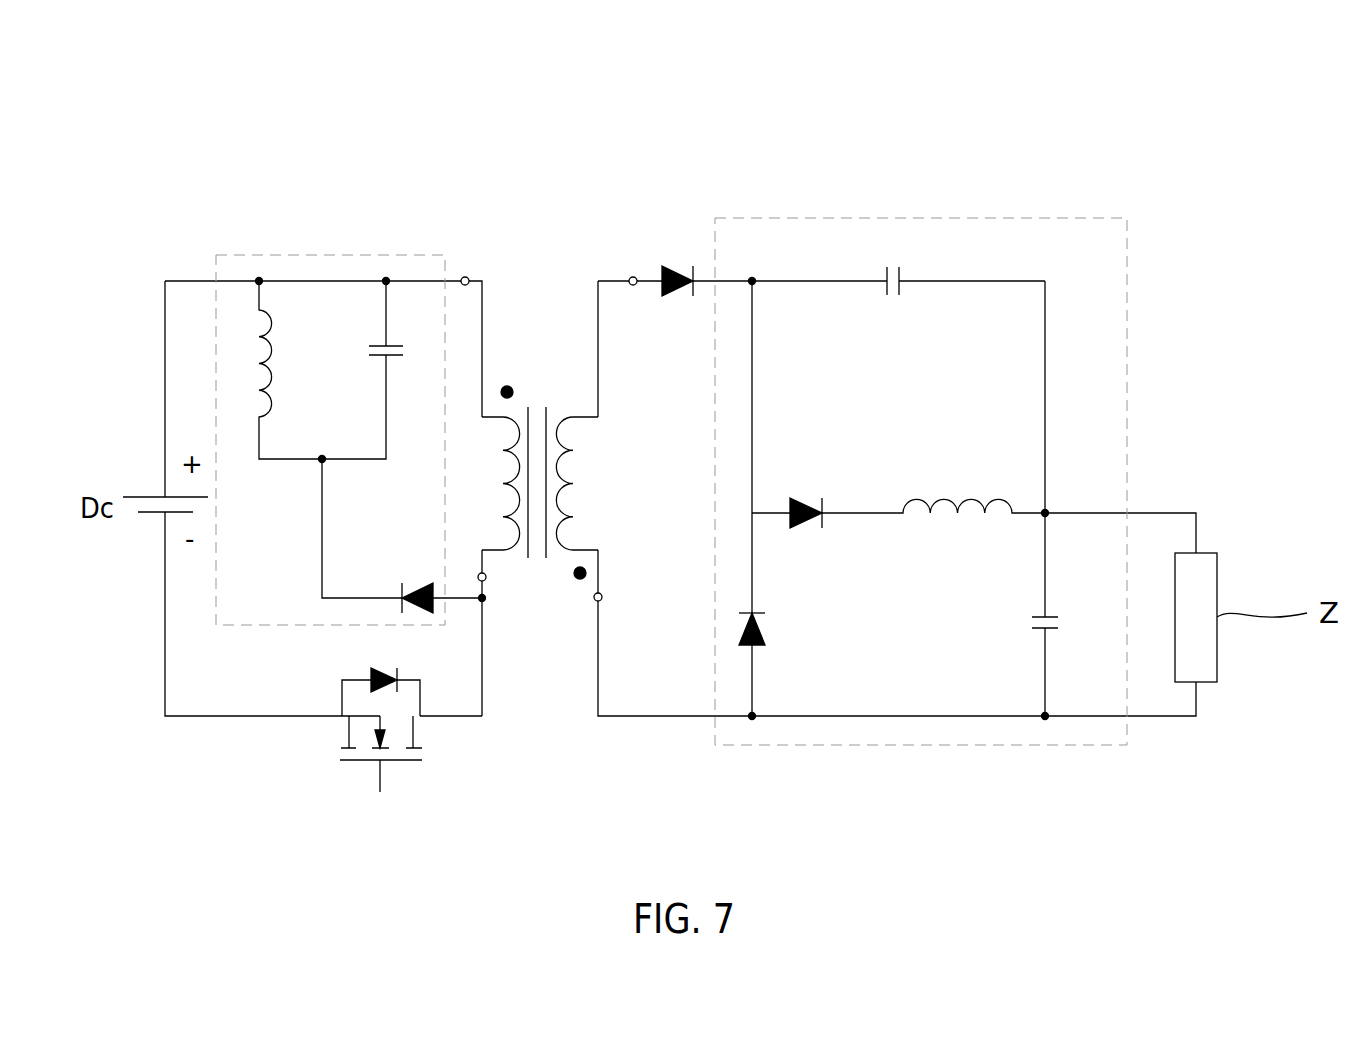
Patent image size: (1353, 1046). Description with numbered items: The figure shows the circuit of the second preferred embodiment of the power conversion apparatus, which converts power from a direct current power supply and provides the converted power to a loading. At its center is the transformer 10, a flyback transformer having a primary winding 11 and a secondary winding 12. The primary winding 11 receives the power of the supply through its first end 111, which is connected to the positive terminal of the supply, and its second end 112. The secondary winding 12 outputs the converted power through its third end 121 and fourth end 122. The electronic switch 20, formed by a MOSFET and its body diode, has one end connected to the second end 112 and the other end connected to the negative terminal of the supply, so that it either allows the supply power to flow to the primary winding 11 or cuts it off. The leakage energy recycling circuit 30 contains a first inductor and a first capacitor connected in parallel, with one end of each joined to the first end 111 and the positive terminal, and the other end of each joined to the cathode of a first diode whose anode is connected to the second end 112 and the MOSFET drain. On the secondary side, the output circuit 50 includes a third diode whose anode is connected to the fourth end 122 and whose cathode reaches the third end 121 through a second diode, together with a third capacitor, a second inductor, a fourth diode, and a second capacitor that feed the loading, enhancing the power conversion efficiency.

The transformer 10 is at (541, 415).
The primary winding 11 is at (494, 468).
The secondary winding 12 is at (585, 498).
The electronic switch 20 is at (343, 783).
The leakage energy recycling circuit 30 is at (323, 255).
The output circuit 50 is at (1087, 217).
The first end 111 is at (465, 277).
The second end 112 is at (486, 579).
The third end 121 is at (633, 277).
The fourth end 122 is at (596, 601).